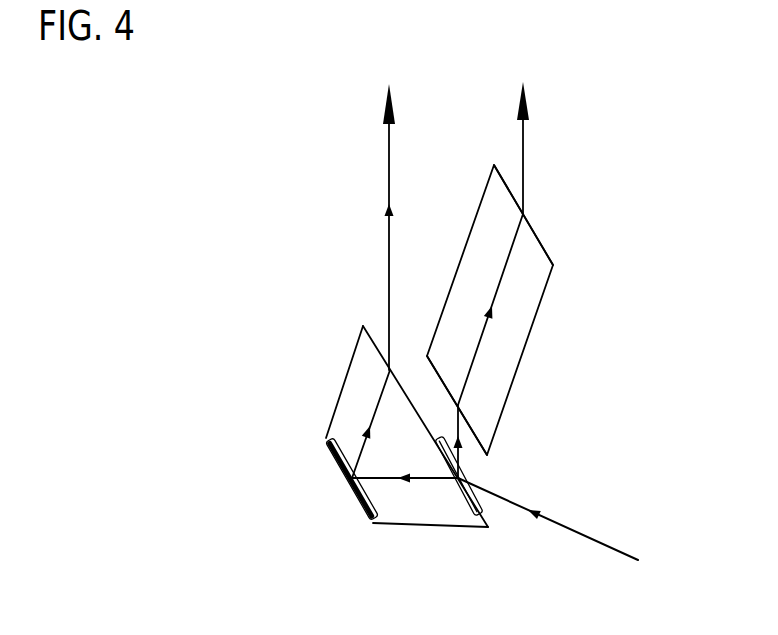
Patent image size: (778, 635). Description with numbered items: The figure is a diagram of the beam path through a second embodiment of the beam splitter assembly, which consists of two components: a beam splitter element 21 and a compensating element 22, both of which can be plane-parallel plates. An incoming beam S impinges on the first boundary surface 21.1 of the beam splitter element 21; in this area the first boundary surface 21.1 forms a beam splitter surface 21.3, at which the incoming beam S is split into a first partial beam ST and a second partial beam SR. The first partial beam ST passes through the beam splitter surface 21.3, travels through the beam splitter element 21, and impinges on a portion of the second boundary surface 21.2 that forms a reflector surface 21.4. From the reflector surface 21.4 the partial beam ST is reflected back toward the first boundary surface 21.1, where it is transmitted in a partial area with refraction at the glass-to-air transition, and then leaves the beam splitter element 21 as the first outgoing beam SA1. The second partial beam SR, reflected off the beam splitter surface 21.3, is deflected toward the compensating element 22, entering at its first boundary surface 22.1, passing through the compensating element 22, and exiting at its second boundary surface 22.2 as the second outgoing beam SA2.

The beam splitter element 21 is at (338, 362).
The first boundary surface 21.1 is at (377, 335).
The second boundary surface 21.2 is at (368, 522).
The beam splitter surface 21.3 is at (466, 522).
The reflector surface 21.4 is at (332, 459).
The compensating element 22 is at (542, 323).
The first boundary surface 22.1 is at (468, 422).
The second boundary surface 22.2 is at (533, 229).
The incoming beam S is at (565, 524).
The second partial beam SR is at (459, 456).
The first partial beam ST is at (428, 480).
The first outgoing beam SA1 is at (389, 140).
The second outgoing beam SA2 is at (524, 148).